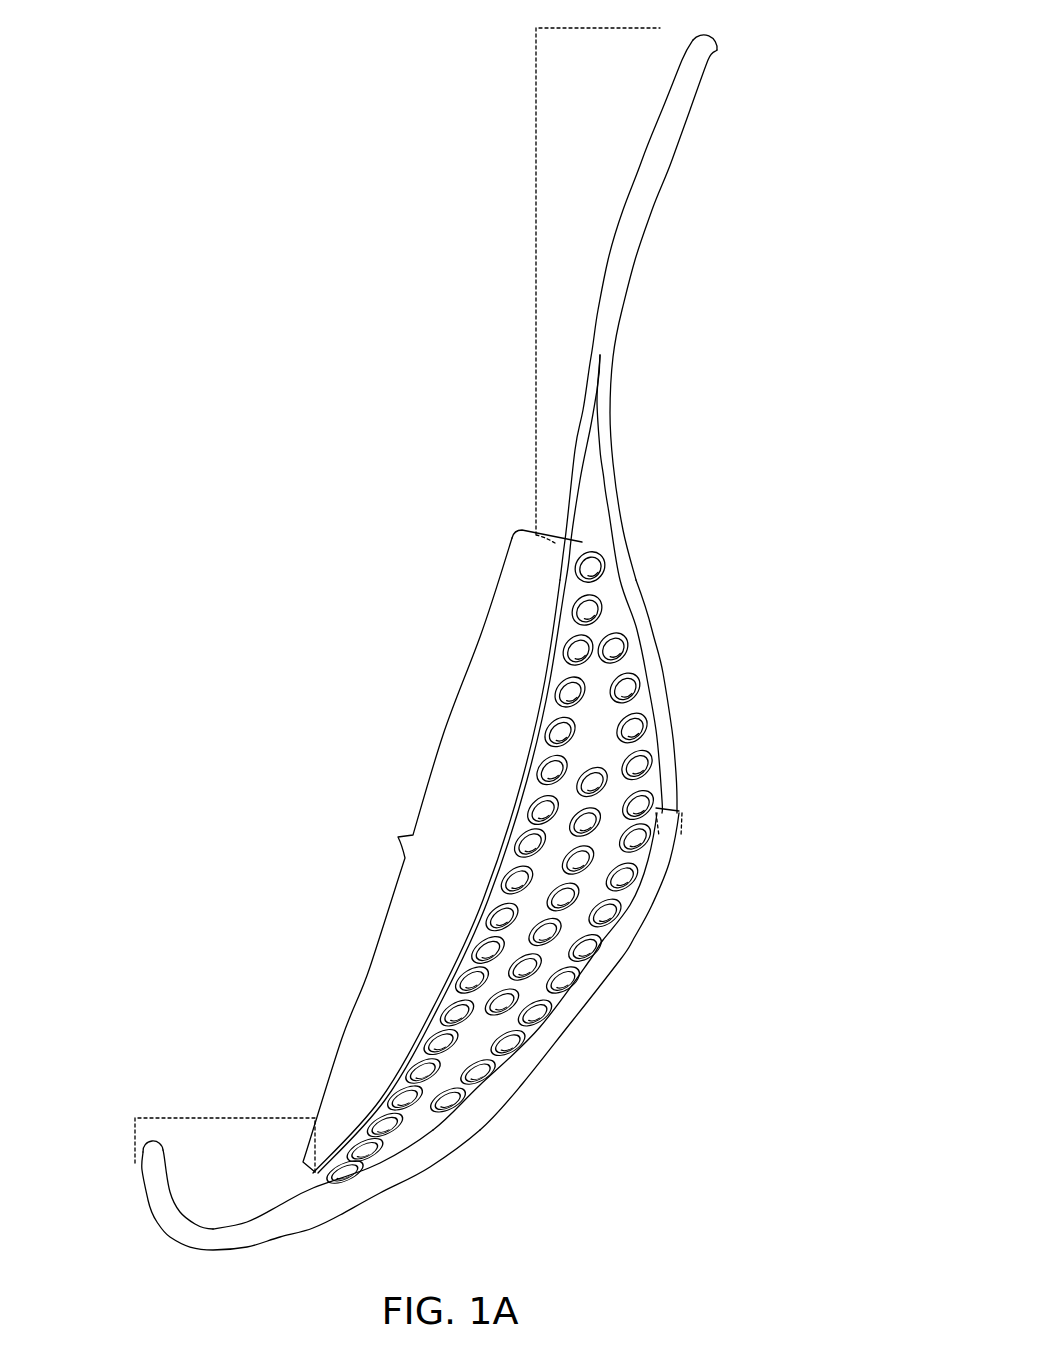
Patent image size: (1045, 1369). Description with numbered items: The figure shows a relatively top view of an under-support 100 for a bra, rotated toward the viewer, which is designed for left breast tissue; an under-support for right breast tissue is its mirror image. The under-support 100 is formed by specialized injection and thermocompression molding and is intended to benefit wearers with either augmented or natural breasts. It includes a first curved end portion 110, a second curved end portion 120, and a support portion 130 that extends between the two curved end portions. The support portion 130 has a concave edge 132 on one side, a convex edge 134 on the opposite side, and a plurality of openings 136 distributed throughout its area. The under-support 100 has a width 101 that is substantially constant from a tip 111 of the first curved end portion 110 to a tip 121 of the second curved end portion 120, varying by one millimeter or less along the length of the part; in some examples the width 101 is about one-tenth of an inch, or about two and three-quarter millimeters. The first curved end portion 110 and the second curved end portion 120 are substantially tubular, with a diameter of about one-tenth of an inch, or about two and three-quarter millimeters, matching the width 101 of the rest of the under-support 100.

The under-support 100 is at (348, 422).
The width 101 is at (675, 806).
The first curved end portion 110 is at (227, 1118).
The tip 111 is at (152, 1155).
The second curved end portion 120 is at (536, 285).
The tip 121 is at (710, 47).
The support portion 130 is at (398, 837).
The concave edge 132 is at (525, 752).
The convex edge 134 is at (663, 684).
The openings 136 is at (615, 917).